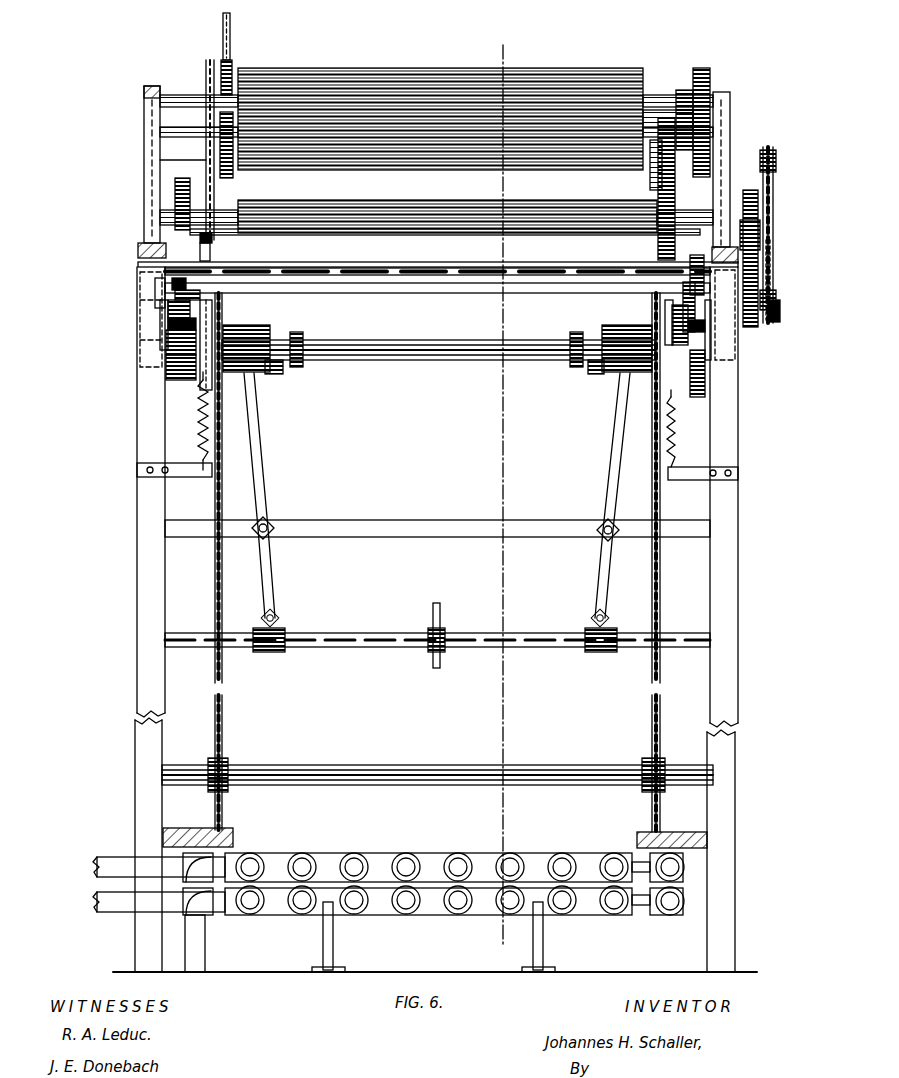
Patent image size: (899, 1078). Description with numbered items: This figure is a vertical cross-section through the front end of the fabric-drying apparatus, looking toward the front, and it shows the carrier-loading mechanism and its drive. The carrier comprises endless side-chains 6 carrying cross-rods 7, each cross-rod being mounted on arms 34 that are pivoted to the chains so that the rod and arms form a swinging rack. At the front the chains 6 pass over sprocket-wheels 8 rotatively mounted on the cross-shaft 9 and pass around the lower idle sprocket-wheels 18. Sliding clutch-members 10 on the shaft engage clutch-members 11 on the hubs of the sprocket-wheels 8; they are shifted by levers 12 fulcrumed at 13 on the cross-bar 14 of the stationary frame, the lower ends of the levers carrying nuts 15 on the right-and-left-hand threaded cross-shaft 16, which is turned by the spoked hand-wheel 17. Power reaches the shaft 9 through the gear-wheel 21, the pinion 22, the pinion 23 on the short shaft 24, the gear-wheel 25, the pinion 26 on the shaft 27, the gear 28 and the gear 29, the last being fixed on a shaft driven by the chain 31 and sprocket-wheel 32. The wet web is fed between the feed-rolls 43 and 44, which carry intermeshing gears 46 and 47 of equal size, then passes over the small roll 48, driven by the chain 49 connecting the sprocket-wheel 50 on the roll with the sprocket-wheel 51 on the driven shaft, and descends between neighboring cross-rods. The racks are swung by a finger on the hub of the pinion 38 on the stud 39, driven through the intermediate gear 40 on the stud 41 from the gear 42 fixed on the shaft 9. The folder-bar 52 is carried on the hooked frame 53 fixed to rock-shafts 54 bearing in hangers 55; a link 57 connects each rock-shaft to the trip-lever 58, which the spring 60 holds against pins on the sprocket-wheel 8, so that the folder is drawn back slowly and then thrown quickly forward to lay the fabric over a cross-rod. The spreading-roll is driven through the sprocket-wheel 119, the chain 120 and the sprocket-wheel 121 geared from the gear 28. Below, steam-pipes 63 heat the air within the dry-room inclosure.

The endless side-chains 6 is at (215, 568).
The cross-rods 7 is at (460, 293).
The sprocket-wheels 8 is at (222, 310).
The cross-shaft 9 is at (438, 362).
The sliding clutch-members 10 is at (265, 326).
The clutch-members 11 is at (238, 374).
The levers 12 is at (262, 462).
The fulcrum 13 is at (272, 520).
The cross-bar 14 is at (442, 522).
The nuts 15 is at (282, 628).
The cross-shaft 16 is at (480, 633).
The spoked hand-wheel 17 is at (430, 622).
The sprocket-wheels 18 is at (210, 742).
The gear-wheel 21 is at (706, 392).
The pinion 22 is at (673, 318).
The pinion 23 is at (690, 272).
The short shaft 24 is at (760, 265).
The gear-wheel 25 is at (772, 285).
The pinion 26 is at (760, 210).
The shaft 27 is at (175, 200).
The gear 28 is at (658, 180).
The gear 29 is at (650, 160).
The chain 31 is at (230, 20).
The sprocket-wheel 32 is at (232, 68).
The arms 34 is at (681, 303).
The pinion 38 is at (160, 310).
The stud 39 is at (155, 290).
The intermediate gear 40 is at (170, 345).
The stud 41 is at (168, 312).
The gear 42 is at (200, 385).
The feed-roll 43 is at (580, 72).
The feed-roll 44 is at (620, 151).
The gear 46 is at (710, 75).
The gear 47 is at (700, 150).
The small roll 48 is at (447, 237).
The chain 49 is at (214, 190).
The sprocket-wheel 50 is at (178, 100).
The sprocket-wheel 51 is at (183, 155).
The folder-bar 52 is at (418, 276).
The frame 53 is at (780, 308).
The rock-shafts 54 is at (175, 296).
The hangers 55 is at (170, 326).
The link 57 is at (175, 380).
The trip-lever 58 is at (296, 368).
The spring 60 is at (198, 432).
The steam-pipes 63 is at (375, 266).
The sprocket-wheel 119 is at (776, 292).
The chain 120 is at (776, 178).
The sprocket-wheel 121 is at (775, 162).